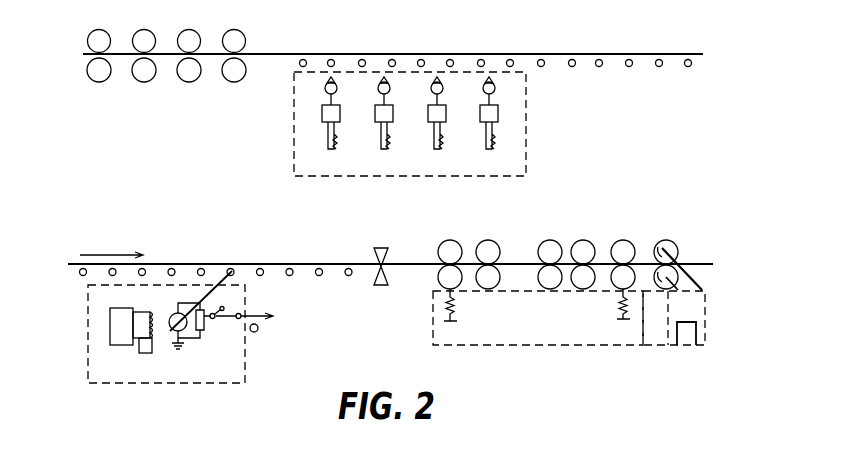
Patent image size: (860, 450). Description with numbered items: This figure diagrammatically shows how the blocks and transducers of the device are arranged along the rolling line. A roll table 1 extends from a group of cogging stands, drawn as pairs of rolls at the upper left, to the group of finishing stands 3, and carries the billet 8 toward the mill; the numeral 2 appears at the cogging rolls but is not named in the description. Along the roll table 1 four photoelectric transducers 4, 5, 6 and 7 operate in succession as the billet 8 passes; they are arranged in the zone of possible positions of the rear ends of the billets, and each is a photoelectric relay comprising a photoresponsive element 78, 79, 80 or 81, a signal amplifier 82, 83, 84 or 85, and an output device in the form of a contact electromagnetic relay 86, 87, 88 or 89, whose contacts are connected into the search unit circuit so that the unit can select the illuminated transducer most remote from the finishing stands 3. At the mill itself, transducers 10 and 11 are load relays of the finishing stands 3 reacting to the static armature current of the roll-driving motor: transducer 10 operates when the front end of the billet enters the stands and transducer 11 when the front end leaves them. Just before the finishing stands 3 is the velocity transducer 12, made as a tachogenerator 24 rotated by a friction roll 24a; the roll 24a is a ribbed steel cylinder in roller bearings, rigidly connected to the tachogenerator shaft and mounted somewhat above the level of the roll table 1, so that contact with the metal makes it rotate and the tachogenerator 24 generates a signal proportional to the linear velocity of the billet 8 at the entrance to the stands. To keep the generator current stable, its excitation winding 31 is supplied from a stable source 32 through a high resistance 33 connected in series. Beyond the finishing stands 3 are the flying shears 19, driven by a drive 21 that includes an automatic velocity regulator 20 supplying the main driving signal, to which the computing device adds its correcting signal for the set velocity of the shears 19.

The roll table 1 is at (600, 67).
The roller pairs 2 is at (226, 74).
The finishing stands 3 is at (582, 241).
The photoelectric transducer 4 is at (328, 118).
The photoelectric transducer 5 is at (380, 118).
The photoelectric transducer 6 is at (433, 118).
The photoelectric transducer 7 is at (485, 118).
The billet 8 is at (246, 262).
The transducer 10 is at (459, 305).
The transducer 11 is at (611, 304).
The velocity transducer 12 is at (243, 351).
The shears 19 is at (664, 246).
The automatic velocity regulator 20 is at (685, 344).
The drive 21 is at (670, 312).
The tachogenerator 24 is at (173, 315).
The friction roll 24a is at (228, 263).
The excitation winding 31 is at (154, 326).
The stable source 32 is at (113, 337).
The high resistance 33 is at (141, 346).
The photoresponsive element 78 is at (318, 88).
The photoresponsive element 79 is at (375, 88).
The photoresponsive element 80 is at (427, 88).
The photoresponsive element 81 is at (479, 88).
The signal amplifier 82 is at (320, 115).
The signal amplifier 83 is at (372, 115).
The signal amplifier 84 is at (425, 115).
The signal amplifier 85 is at (477, 115).
The contact electromagnetic relay 86 is at (342, 141).
The contact electromagnetic relay 87 is at (395, 141).
The contact electromagnetic relay 88 is at (448, 141).
The contact electromagnetic relay 89 is at (500, 141).